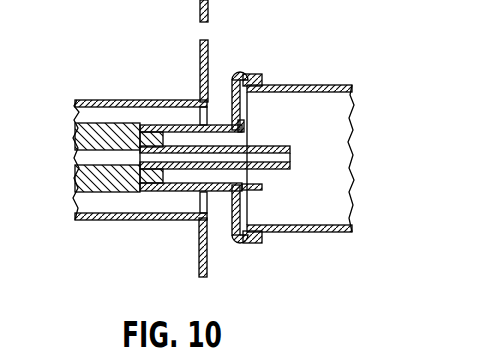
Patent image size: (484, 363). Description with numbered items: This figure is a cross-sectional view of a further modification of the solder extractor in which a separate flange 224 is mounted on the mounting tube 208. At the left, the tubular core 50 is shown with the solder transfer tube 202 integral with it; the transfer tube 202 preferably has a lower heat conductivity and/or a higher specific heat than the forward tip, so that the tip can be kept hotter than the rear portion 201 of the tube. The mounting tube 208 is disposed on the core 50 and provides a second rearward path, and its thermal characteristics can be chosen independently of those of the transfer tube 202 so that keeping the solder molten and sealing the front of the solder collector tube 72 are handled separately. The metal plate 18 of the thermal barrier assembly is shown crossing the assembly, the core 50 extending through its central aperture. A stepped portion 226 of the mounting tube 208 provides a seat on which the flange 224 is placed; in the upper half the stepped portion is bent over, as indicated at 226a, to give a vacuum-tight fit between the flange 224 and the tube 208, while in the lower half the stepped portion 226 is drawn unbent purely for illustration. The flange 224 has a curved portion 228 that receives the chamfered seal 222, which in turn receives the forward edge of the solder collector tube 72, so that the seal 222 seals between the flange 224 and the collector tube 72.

The plate 18 is at (200, 70).
The tubular core 50 is at (96, 188).
The solder collector tube 72 is at (328, 87).
The rear portion 201 is at (290, 155).
The solder transfer tube 202 is at (178, 168).
The mounting tube 208 is at (228, 192).
The chamfered seal 222 is at (250, 248).
The flange 224 is at (229, 86).
The stepped portion 226 is at (260, 190).
The bent portion 226a is at (247, 124).
The curved portion 228 is at (248, 82).